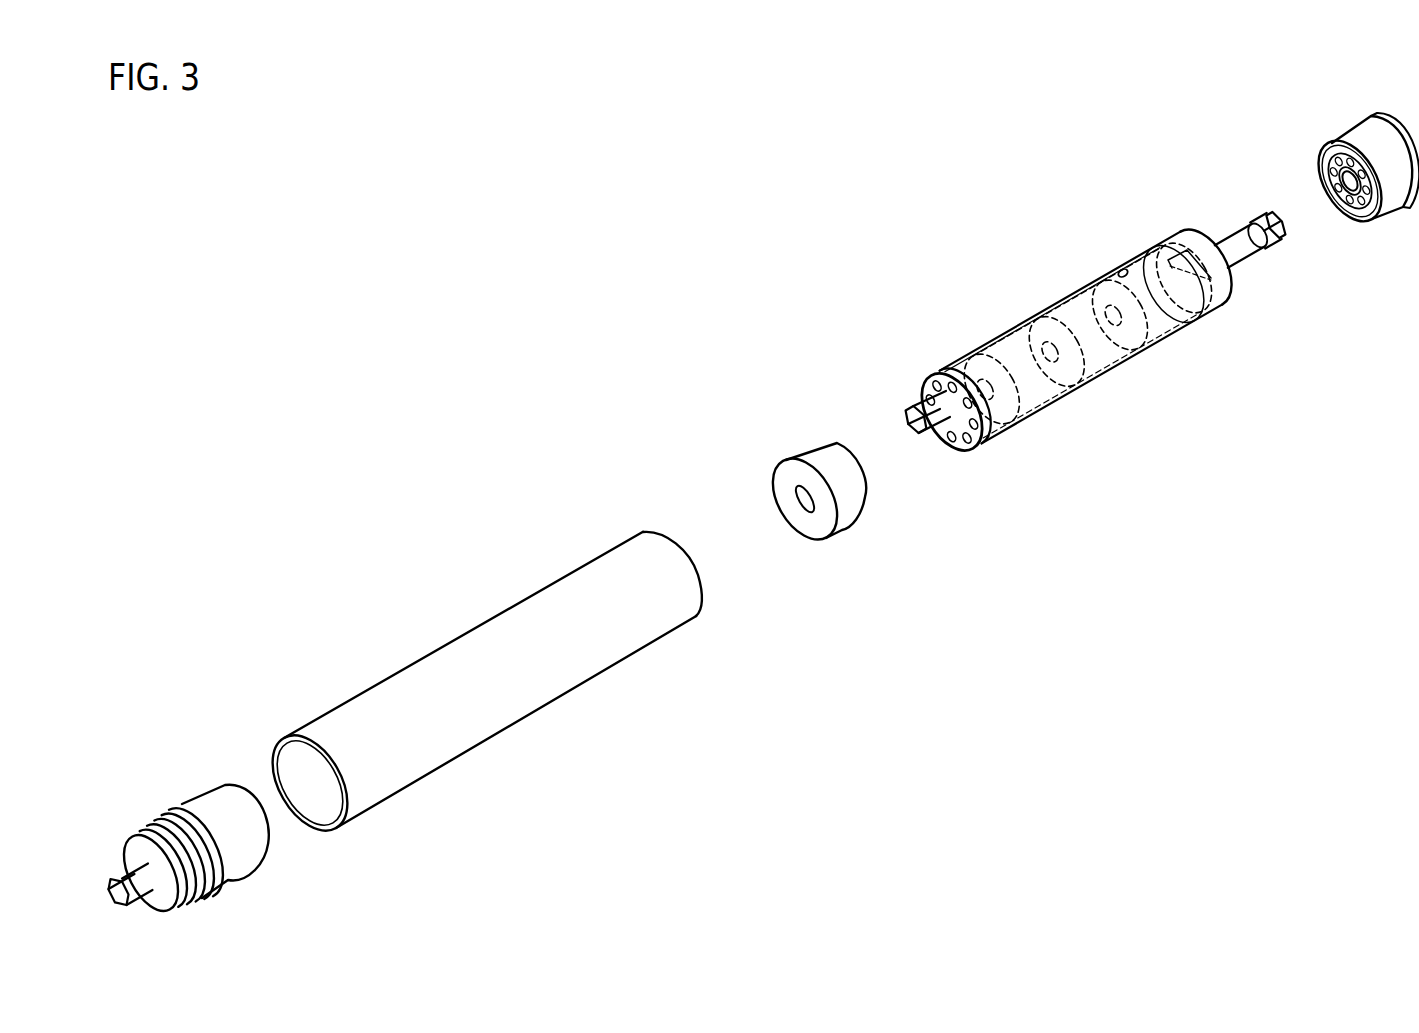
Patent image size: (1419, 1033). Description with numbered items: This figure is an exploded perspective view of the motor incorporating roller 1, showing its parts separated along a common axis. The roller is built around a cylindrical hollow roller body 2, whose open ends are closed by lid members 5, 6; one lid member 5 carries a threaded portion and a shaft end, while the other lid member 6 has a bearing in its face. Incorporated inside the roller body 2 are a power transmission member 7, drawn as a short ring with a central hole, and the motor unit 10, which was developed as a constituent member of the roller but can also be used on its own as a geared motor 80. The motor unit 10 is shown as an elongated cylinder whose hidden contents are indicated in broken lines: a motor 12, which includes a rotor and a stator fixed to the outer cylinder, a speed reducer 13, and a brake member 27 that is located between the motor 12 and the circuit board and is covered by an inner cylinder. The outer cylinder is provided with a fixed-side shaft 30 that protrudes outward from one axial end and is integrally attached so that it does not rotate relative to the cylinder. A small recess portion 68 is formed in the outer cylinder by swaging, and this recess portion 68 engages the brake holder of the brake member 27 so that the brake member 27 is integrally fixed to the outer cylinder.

The motor incorporating roller 1 is at (777, 258).
The roller body 2 is at (469, 655).
The lid member 5 is at (220, 807).
The lid member 6 is at (1363, 134).
The power transmission member 7 is at (812, 453).
The motor unit 10 is at (1096, 279).
The geared motor 80 is at (1098, 336).
The motor 12 is at (1108, 352).
The speed reducer 13 is at (1037, 397).
The brake member 27 is at (1180, 322).
The fixed-side shaft 30 is at (1237, 258).
The recess portion 68 is at (1123, 267).